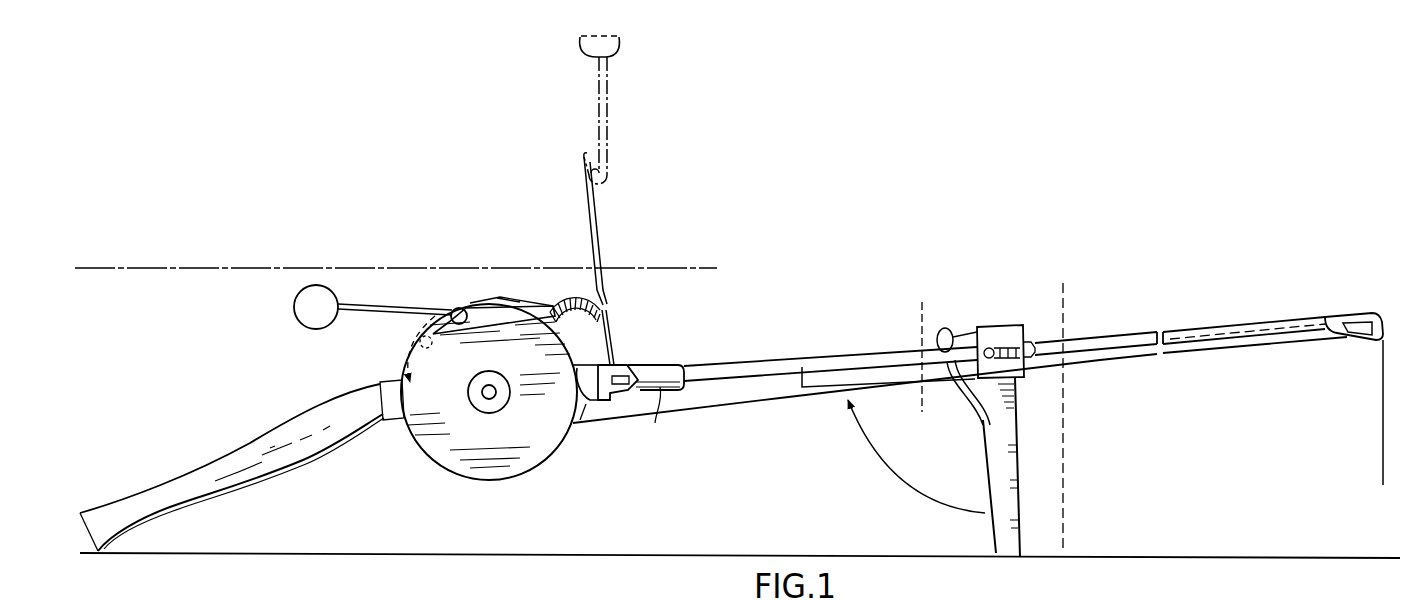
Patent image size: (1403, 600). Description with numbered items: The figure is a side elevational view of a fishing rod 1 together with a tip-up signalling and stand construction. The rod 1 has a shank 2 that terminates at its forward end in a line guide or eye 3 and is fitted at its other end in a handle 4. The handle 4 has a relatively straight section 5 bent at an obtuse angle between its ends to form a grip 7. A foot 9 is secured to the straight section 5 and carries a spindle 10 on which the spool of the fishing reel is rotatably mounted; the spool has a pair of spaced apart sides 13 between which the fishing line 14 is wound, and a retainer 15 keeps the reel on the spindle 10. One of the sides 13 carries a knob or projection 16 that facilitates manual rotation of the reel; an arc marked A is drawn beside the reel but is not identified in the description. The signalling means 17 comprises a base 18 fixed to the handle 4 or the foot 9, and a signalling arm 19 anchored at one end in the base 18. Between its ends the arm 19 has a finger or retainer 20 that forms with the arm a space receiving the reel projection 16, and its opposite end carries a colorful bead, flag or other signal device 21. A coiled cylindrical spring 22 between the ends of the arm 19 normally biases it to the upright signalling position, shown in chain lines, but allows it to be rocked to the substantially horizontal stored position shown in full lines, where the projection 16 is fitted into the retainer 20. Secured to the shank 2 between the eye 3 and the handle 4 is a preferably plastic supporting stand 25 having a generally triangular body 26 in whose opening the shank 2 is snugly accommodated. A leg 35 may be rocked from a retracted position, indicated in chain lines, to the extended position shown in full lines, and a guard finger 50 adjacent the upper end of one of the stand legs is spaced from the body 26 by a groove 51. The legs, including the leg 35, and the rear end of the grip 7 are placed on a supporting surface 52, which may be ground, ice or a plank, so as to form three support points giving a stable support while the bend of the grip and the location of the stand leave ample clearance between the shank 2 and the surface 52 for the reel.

The fishing rod 1 is at (705, 421).
The shank 2 is at (770, 362).
The line guide or eye 3 is at (1347, 318).
The handle 4 is at (652, 366).
The straight section 5 is at (660, 418).
The grip 7 is at (294, 455).
The foot 9 is at (584, 414).
The spindle 10 is at (484, 398).
The sides 13 is at (536, 424).
The fishing line 14 is at (785, 400).
The retainer 15 is at (503, 379).
The knob or projection 16 is at (456, 309).
The signalling means 17 is at (614, 197).
The base 18 is at (618, 375).
The signalling arm 19 is at (600, 238).
The finger or retainer 20 is at (490, 308).
The signal device 21 is at (293, 301).
The coiled cylindrical spring 22 is at (596, 310).
The supporting stand 25 is at (998, 301).
The triangular body 26 is at (1000, 330).
The leg 35 is at (1010, 498).
The guard finger 50 is at (957, 313).
The groove 51 is at (968, 410).
The supporting surface 52 is at (832, 557).
The rotation direction A is at (402, 358).